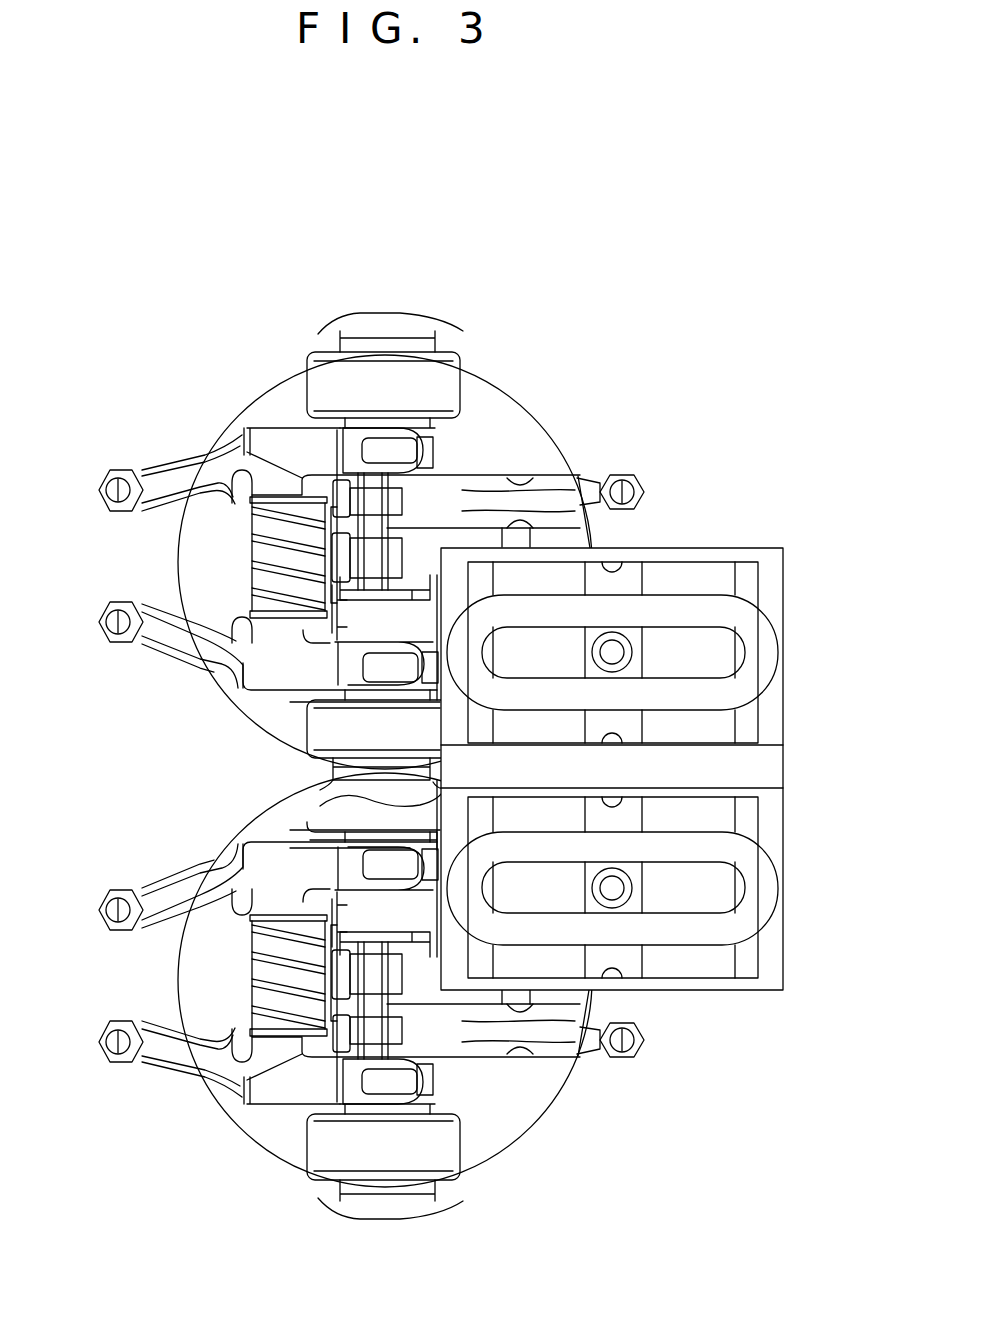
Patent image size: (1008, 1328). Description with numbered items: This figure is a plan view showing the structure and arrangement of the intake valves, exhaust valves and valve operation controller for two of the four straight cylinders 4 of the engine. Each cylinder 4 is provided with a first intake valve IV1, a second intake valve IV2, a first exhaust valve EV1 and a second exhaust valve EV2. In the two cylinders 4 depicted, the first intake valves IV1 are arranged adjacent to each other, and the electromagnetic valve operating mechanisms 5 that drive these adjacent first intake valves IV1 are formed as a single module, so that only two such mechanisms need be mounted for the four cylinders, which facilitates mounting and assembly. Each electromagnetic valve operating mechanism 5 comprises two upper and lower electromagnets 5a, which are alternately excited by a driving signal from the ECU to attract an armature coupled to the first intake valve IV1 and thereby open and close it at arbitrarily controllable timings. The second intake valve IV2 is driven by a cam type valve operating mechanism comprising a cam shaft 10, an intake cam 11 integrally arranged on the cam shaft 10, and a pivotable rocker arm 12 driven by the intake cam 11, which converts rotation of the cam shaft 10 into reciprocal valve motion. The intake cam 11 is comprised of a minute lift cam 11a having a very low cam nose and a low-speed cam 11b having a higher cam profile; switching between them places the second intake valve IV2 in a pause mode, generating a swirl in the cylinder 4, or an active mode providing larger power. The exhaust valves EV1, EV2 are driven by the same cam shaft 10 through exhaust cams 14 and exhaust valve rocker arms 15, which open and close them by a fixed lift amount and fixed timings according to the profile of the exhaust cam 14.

The cylinder 4 is at (507, 395).
The electromagnetic valve operating mechanism 5 is at (800, 575).
The electromagnet 5a is at (768, 648).
The cam shaft 10 is at (373, 320).
The intake cam 11 is at (247, 267).
The minute lift cam 11a is at (368, 502).
The low-speed cam 11b is at (360, 563).
The rocker arm 12 is at (447, 490).
The exhaust cam 14 is at (397, 447).
The exhaust valve rocker arm 15 is at (262, 483).
The first exhaust valve EV1 is at (160, 650).
The second exhaust valve EV2 is at (197, 453).
The first intake valve IV1 is at (615, 648).
The second intake valve IV2 is at (590, 470).